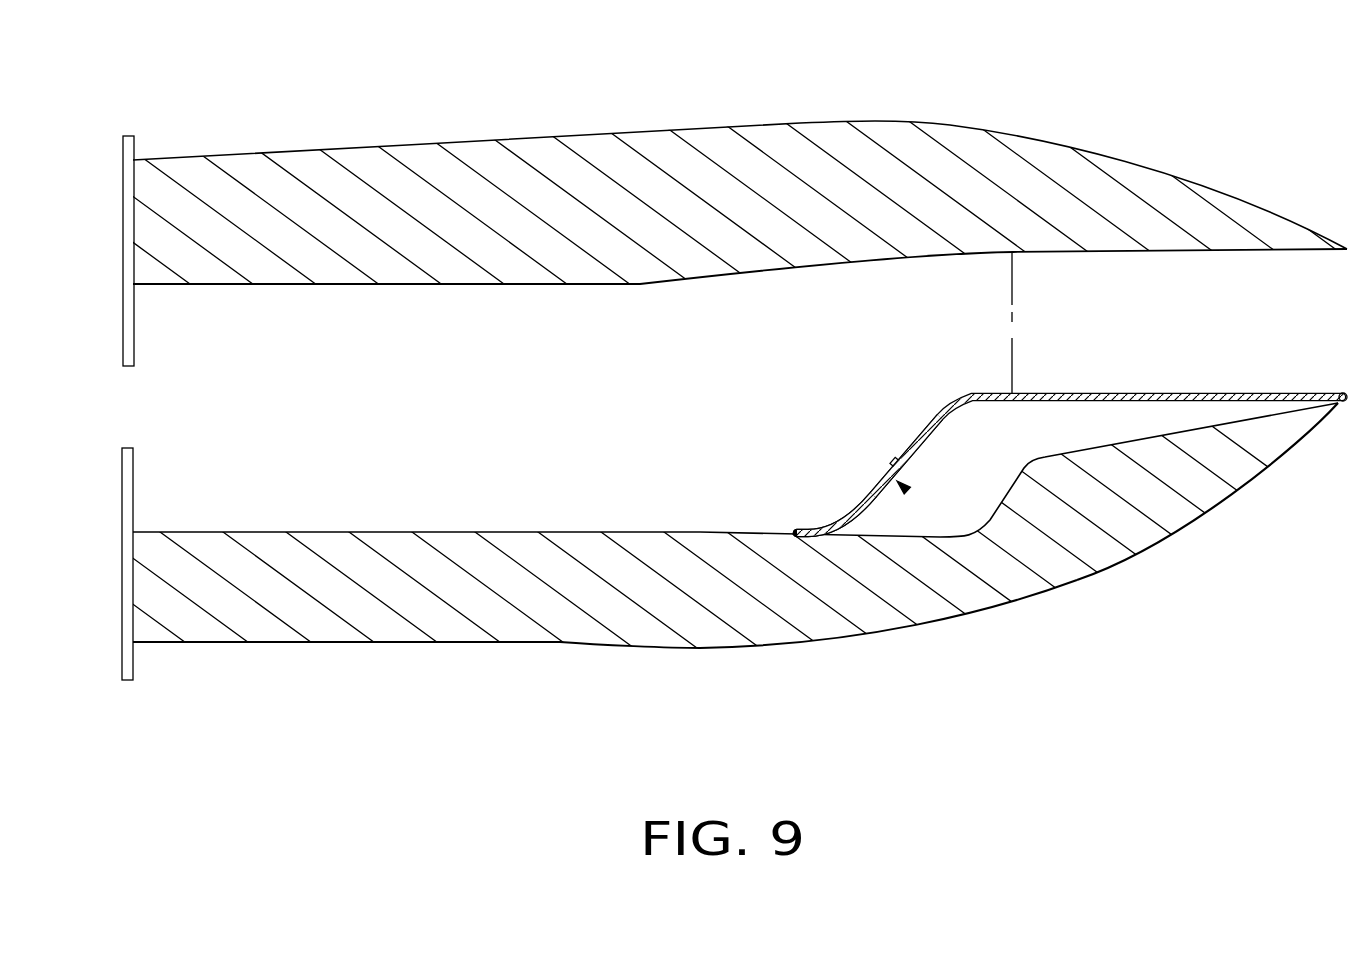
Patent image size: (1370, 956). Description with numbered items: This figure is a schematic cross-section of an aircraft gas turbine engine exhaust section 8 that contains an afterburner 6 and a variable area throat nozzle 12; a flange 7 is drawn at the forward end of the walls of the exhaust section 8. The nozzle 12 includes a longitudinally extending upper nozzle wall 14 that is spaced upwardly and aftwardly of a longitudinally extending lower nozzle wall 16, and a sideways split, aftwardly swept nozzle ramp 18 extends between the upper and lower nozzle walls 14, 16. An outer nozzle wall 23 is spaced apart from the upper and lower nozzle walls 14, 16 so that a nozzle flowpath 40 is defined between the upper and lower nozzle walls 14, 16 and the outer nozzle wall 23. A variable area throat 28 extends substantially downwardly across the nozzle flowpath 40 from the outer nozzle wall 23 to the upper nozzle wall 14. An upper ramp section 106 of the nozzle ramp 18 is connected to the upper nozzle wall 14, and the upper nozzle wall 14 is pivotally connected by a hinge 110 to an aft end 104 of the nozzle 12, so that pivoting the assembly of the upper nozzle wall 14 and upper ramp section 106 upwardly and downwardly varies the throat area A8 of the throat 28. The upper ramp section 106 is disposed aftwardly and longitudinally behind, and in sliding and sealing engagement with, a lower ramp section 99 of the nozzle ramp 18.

The afterburner 6 is at (146, 398).
The flange 7 is at (134, 326).
The exhaust section 8 is at (706, 76).
The variable area throat nozzle 12 is at (960, 125).
The upper nozzle wall 14 is at (1143, 392).
The lower nozzle wall 16 is at (652, 532).
The nozzle ramp 18 is at (908, 490).
The outer nozzle wall 23 is at (1095, 252).
The variable area throat 28 is at (1010, 365).
The nozzle flowpath 40 is at (762, 392).
The lower ramp section 99 is at (868, 491).
The aft end 104 is at (1320, 427).
The upper ramp section 106 is at (930, 433).
The hinge 110 is at (1345, 393).
The throat area A8 is at (1031, 322).